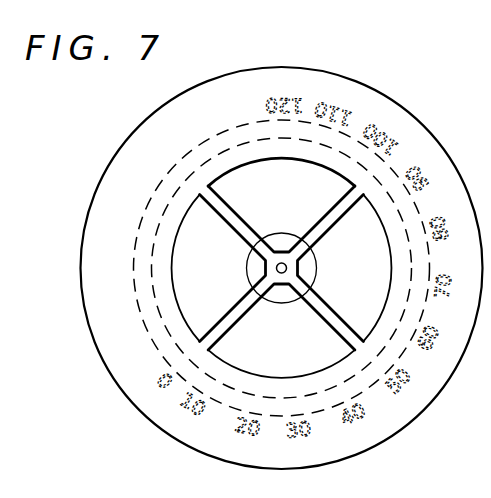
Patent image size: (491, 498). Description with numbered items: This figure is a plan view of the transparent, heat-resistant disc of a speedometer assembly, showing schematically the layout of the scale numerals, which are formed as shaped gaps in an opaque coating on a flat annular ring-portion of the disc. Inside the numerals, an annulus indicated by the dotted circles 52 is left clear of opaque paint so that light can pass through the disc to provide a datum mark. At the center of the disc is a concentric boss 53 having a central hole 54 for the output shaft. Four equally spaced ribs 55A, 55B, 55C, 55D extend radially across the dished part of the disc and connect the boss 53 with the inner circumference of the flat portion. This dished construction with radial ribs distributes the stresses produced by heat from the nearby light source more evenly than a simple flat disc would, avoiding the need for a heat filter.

The dotted circles 52 is at (157, 231).
The concentric boss 53 is at (281, 274).
The central hole 54 is at (280, 258).
The rib 55A is at (338, 204).
The rib 55B is at (346, 294).
The rib 55C is at (228, 316).
The rib 55D is at (220, 214).